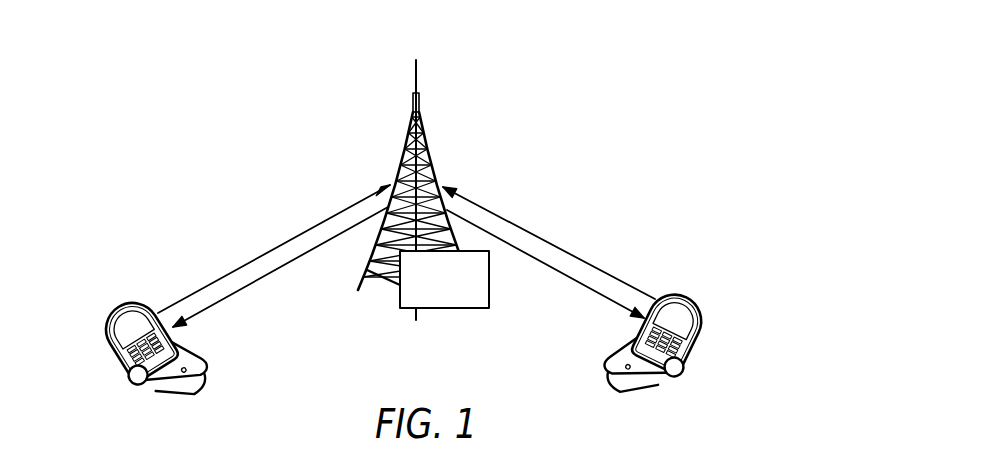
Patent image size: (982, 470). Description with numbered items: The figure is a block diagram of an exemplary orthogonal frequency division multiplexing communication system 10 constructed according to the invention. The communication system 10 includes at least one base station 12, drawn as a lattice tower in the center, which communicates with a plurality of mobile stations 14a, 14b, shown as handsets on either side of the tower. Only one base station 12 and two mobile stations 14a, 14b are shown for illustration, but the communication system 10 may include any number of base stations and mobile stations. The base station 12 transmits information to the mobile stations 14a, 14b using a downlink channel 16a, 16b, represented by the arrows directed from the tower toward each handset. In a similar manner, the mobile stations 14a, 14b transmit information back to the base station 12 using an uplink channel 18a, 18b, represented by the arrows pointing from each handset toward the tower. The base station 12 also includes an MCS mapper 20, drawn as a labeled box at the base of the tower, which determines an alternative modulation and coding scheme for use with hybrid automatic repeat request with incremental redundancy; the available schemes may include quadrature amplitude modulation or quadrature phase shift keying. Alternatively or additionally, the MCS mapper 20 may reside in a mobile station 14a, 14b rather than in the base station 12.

The communication system 10 is at (664, 35).
The base station 12 is at (430, 155).
The mobile station 14a is at (113, 357).
The mobile station 14b is at (687, 365).
The downlink channel 16a is at (241, 291).
The downlink channel 16b is at (597, 293).
The uplink channel 18a is at (255, 259).
The uplink channel 18b is at (603, 267).
The MCS mapper 20 is at (445, 309).